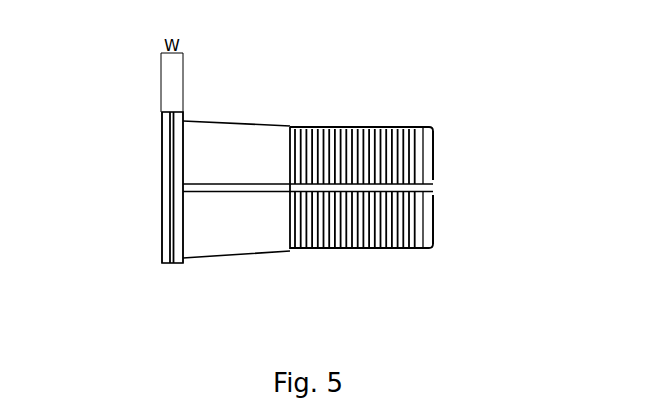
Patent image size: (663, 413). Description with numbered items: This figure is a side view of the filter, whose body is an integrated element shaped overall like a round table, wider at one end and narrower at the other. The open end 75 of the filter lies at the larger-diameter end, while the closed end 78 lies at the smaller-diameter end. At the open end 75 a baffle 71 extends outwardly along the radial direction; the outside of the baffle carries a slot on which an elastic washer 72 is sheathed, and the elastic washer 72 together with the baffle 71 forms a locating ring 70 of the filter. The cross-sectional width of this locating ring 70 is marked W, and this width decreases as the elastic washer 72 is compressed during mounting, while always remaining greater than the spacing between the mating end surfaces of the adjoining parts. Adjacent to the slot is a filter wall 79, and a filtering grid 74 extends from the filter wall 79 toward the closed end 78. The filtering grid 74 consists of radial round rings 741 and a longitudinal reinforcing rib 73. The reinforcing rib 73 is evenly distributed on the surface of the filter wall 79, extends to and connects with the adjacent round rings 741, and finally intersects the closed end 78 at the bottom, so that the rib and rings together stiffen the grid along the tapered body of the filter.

The locating ring 70 is at (175, 178).
The baffle 71 is at (166, 258).
The elastic washer 72 is at (177, 239).
The reinforcing rib 73 is at (254, 187).
The filtering grid 74 is at (380, 127).
The round rings 741 is at (387, 248).
The open end 75 is at (157, 207).
The closed end 78 is at (433, 158).
The filter wall 79 is at (248, 140).